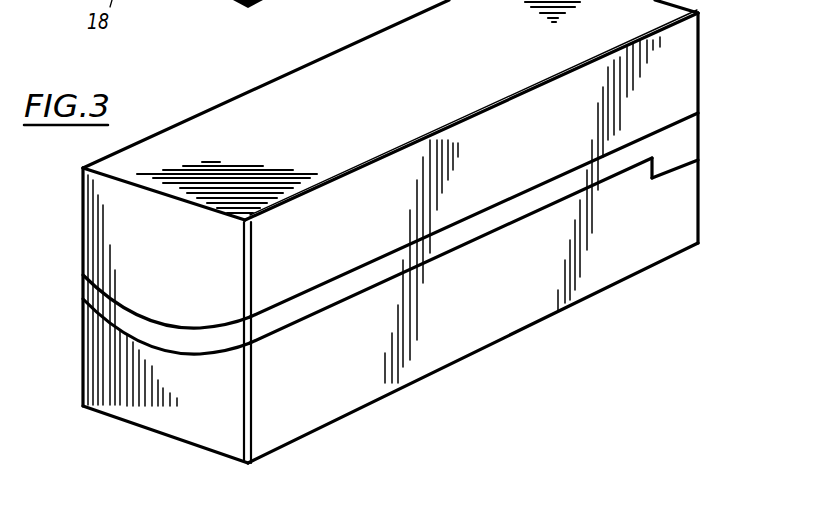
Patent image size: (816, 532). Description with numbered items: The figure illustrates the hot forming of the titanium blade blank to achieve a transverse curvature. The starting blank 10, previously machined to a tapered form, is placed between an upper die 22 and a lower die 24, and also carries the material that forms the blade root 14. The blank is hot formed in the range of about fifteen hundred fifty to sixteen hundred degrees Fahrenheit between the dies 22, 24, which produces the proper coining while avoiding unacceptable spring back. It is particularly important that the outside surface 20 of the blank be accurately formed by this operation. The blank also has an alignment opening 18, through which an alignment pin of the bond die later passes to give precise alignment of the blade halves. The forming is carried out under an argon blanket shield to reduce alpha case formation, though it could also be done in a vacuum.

The starting blank 10 is at (488, 224).
The blade root 14 is at (680, 149).
The alignment opening 18 is at (217, 353).
The outside surface 20 is at (135, 342).
The die 22 is at (115, 237).
The die 24 is at (153, 413).